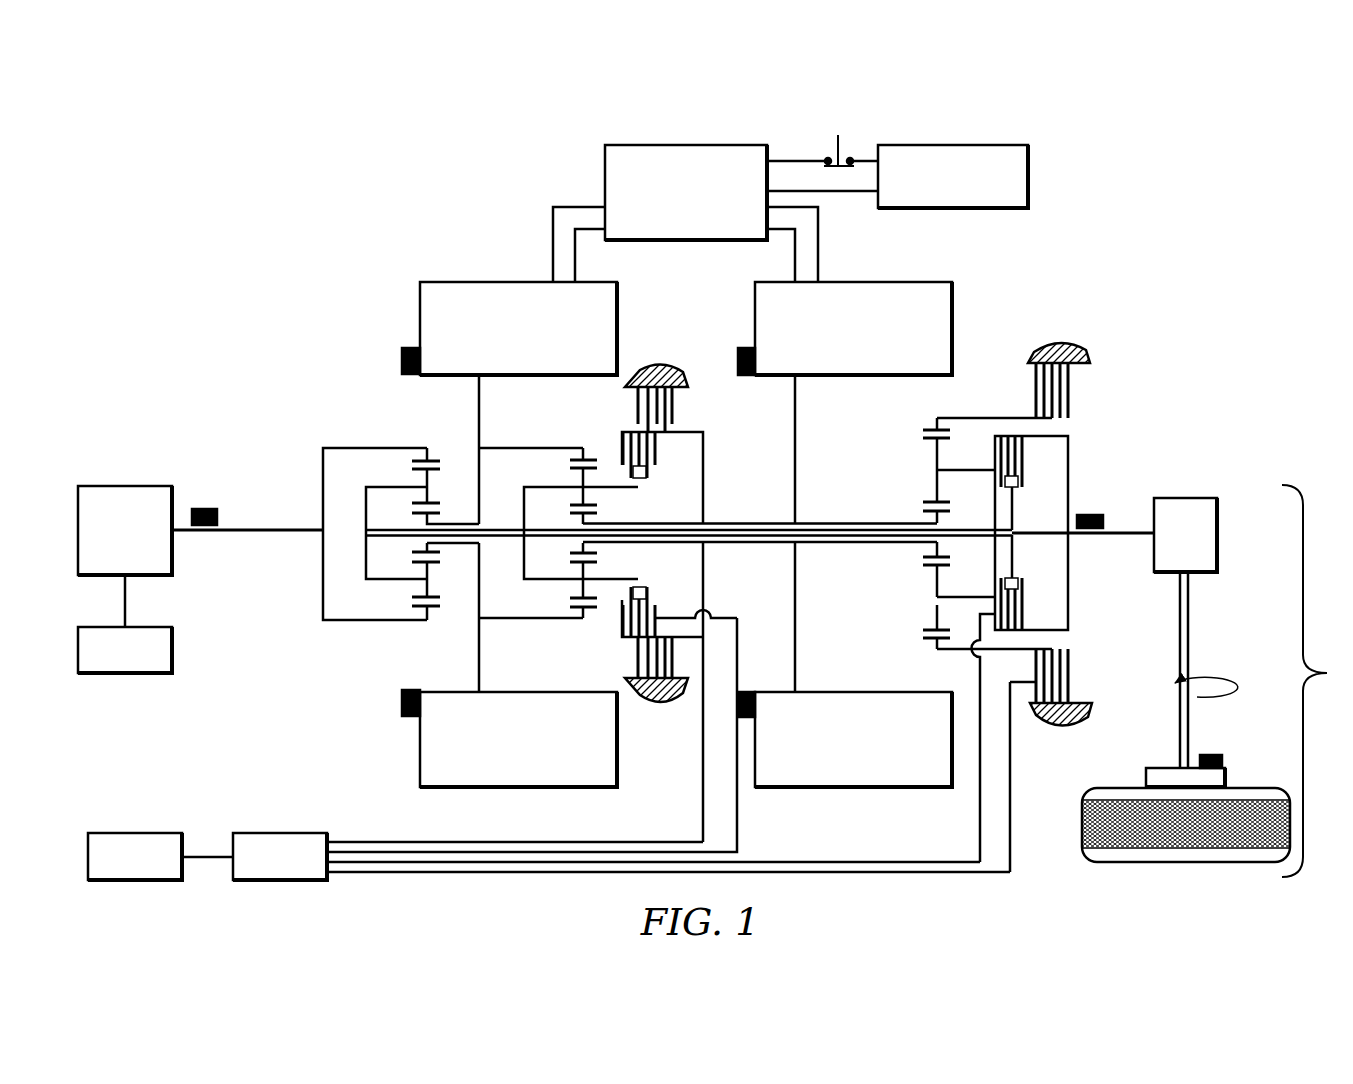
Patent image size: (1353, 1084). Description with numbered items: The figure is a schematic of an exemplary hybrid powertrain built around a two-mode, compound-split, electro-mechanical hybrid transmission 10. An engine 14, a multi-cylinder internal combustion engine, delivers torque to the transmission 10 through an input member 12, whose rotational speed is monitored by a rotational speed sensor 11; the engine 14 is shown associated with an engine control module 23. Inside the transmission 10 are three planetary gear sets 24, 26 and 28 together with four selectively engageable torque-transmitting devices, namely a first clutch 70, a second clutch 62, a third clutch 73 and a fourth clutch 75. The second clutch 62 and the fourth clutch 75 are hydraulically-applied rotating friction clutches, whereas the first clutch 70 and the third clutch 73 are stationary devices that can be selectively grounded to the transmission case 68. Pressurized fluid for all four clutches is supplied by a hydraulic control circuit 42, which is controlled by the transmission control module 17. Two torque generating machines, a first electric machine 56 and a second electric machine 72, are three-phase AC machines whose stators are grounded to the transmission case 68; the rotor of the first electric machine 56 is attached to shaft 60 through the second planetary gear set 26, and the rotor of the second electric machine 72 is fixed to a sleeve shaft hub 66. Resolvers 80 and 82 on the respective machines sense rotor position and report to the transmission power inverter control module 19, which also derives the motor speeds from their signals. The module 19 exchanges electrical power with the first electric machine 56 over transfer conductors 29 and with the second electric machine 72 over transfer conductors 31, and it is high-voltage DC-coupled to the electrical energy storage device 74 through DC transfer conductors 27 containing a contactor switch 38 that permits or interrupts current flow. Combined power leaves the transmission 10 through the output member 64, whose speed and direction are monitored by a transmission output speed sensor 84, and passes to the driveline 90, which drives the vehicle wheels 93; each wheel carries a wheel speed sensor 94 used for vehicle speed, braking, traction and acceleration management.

The electro-mechanical hybrid transmission 10 is at (382, 243).
The rotational speed sensor 11 is at (205, 508).
The input member 12 is at (283, 528).
The engine 14 is at (130, 486).
The transmission control module 17 is at (125, 833).
The transmission power inverter control module 19 is at (605, 160).
The engine control module 23 is at (170, 673).
The first planetary gear set 24 is at (418, 444).
The second planetary gear set 26 is at (580, 444).
The DC transfer conductors 27 is at (788, 160).
The third planetary gear set 28 is at (930, 419).
The transfer conductors 29 is at (553, 245).
The transfer conductors 31 is at (818, 240).
The contactor switch 38 is at (840, 136).
The hydraulic control circuit 42 is at (250, 833).
The first electric machine 56 is at (420, 315).
The shaft 60 is at (985, 530).
The clutch C2 62 is at (1029, 476).
The output member 64 is at (1123, 530).
The sleeve shaft hub 66 is at (830, 522).
The transmission case 68 is at (655, 368).
The clutch C1 70 is at (1028, 385).
The second electric machine 72 is at (952, 298).
The clutch C3 73 is at (680, 410).
The electrical energy storage device 74 is at (1030, 167).
The clutch C4 75 is at (652, 472).
The resolver 80 is at (402, 362).
The resolver 82 is at (746, 348).
The transmission output speed sensor 84 is at (1090, 515).
The driveline 90 is at (1327, 673).
The vehicle wheel 93 is at (1145, 778).
The wheel speed sensor 94 is at (1212, 755).